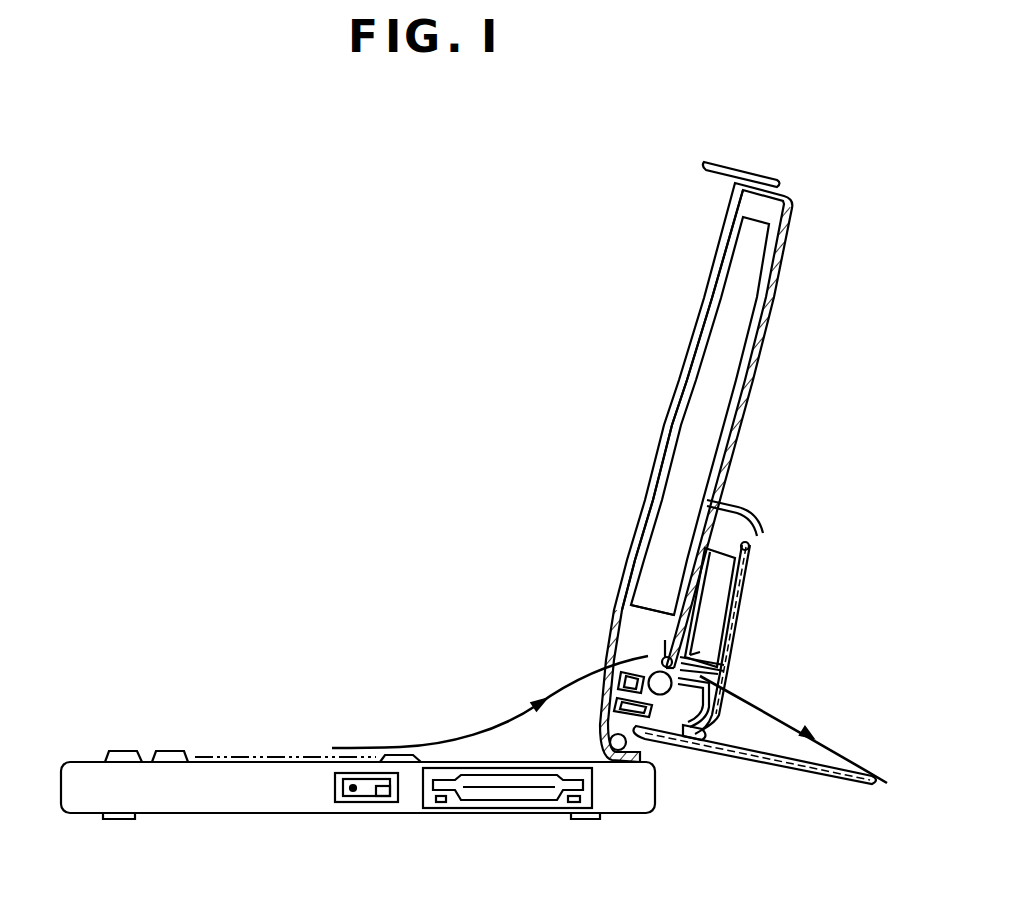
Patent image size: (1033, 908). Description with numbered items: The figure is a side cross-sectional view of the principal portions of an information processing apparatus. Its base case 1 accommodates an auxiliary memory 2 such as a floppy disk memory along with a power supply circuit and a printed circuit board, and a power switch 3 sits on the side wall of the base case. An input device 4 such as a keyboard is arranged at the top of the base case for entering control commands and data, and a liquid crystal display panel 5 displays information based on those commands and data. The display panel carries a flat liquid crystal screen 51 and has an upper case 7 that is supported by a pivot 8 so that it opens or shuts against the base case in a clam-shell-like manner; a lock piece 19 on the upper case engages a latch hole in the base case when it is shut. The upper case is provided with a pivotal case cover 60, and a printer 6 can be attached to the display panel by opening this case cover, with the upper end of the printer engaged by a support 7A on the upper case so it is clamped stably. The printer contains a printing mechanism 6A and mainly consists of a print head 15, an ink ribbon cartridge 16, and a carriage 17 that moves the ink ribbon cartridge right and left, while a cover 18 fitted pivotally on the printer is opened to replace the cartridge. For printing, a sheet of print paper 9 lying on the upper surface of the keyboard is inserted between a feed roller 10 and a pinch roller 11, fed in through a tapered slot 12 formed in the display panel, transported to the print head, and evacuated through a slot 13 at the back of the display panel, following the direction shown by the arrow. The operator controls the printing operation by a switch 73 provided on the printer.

The base case 1 is at (235, 814).
The auxiliary memory 2 is at (503, 791).
The power switch 3 is at (378, 803).
The input device 4 is at (174, 751).
The liquid crystal display panel 5 is at (711, 332).
The liquid crystal screen 51 is at (685, 388).
The printer 6 is at (755, 582).
The printing mechanism 6A is at (718, 748).
The case cover 60 is at (816, 773).
The upper case 7 is at (772, 290).
The support 7A is at (714, 503).
The pivot 8 is at (600, 741).
The print paper 9 is at (480, 722).
The feed roller 10 is at (657, 694).
The pinch roller 11 is at (650, 633).
The slot 12 is at (640, 662).
The slot 13 is at (728, 681).
The print head 15 is at (708, 648).
The ink ribbon cartridge 16 is at (708, 507).
The carriage 17 is at (685, 552).
The cover 18 is at (742, 613).
The lock piece 19 is at (705, 169).
The switch 73 is at (757, 520).